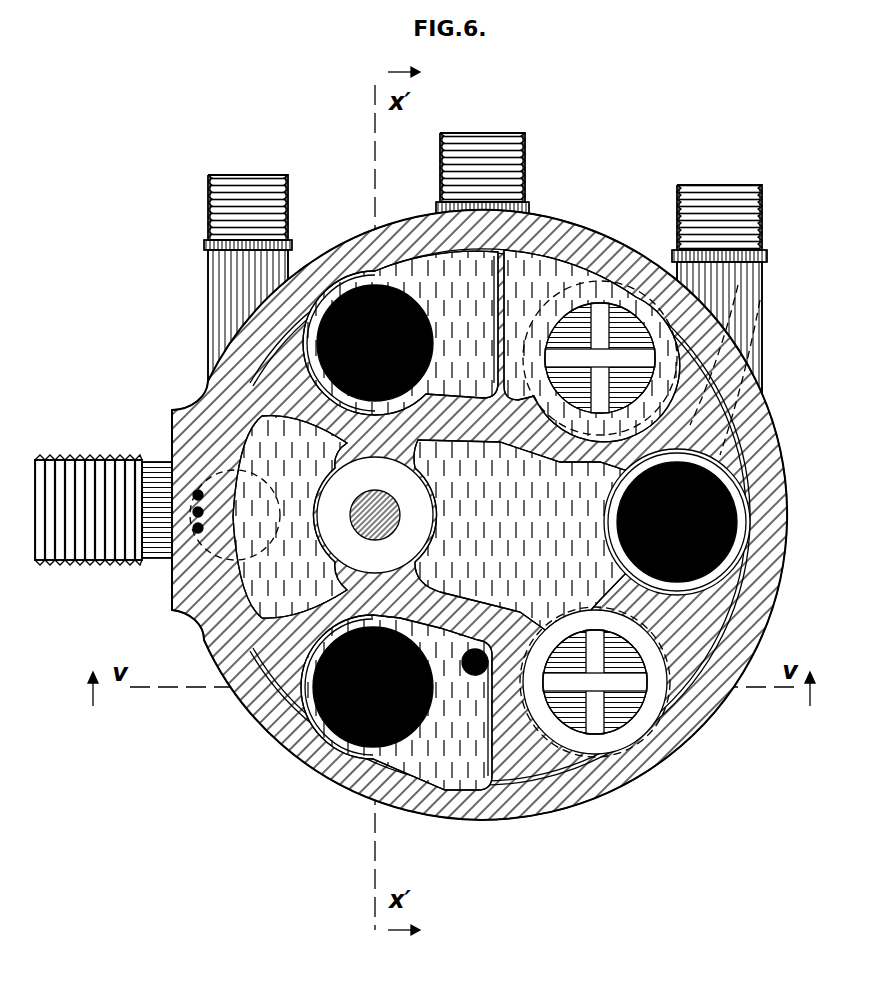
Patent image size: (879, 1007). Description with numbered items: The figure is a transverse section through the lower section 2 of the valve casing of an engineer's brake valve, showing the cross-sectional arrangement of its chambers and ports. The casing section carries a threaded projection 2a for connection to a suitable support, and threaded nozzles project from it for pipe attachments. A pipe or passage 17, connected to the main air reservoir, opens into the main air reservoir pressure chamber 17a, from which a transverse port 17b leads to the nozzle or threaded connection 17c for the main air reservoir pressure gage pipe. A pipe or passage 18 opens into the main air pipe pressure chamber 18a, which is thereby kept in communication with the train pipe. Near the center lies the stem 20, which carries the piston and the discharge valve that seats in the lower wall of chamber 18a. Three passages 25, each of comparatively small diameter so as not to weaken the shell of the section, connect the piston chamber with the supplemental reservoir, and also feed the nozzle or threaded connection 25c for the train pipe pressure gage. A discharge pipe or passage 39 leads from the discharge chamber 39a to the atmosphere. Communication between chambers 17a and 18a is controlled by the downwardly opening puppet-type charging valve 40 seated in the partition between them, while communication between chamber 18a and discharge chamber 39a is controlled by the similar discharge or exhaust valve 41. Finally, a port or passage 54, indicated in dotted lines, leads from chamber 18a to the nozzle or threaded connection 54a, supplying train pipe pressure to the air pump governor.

The lower section of the valve casing 2 is at (490, 515).
The threaded projection 2a is at (103, 494).
The main air reservoir pipe or passage 17 is at (335, 734).
The main air reservoir pressure chamber 17a is at (454, 718).
The port or passage 17b is at (465, 682).
The nozzle or threaded connection 17c is at (508, 173).
The main air pipe passage 18 is at (728, 558).
The main air pipe pressure chamber 18a is at (574, 541).
The stem 20 is at (375, 515).
The port or passage 25 is at (203, 496).
The nozzle or threaded connection 25c is at (216, 292).
The discharge pipe or passage 39 is at (358, 288).
The discharge chamber 39a is at (490, 319).
The charging valve 40 is at (595, 682).
The discharge or exhaust valve 41 is at (592, 346).
The port or passage 54 is at (746, 364).
The nozzle or threaded connection 54a is at (743, 298).